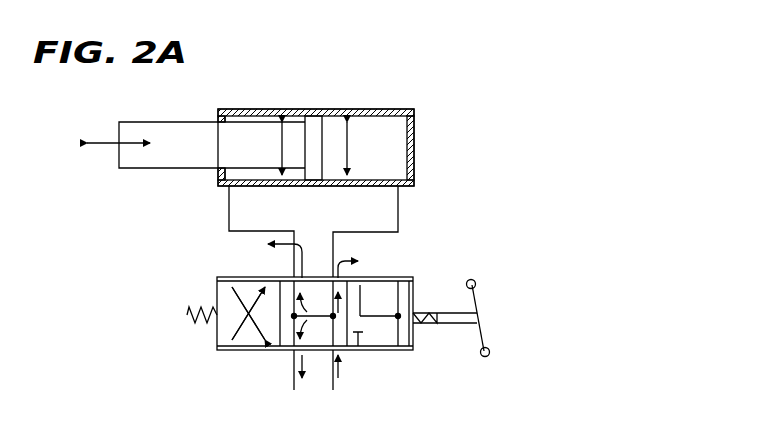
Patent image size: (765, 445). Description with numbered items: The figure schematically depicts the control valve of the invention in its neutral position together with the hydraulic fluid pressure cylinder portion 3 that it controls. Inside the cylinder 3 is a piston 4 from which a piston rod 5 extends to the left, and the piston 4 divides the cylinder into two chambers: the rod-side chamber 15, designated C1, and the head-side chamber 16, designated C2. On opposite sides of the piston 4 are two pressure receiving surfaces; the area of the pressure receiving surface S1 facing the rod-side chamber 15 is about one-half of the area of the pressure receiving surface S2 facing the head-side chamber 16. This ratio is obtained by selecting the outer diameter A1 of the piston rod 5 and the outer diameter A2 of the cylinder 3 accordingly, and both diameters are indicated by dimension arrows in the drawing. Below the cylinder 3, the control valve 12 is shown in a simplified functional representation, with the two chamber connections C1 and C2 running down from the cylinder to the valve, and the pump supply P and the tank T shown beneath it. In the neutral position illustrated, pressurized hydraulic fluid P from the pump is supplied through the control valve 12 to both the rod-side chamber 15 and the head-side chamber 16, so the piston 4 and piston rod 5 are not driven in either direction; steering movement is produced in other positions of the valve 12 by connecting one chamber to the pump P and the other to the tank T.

The hydraulic fluid pressure cylinder portion 3 is at (377, 108).
The piston 4 is at (313, 180).
The piston rod 5 is at (163, 160).
The control valve 12 is at (386, 277).
The rod-side chamber 15 is at (262, 180).
The head-side chamber 16 is at (400, 146).
The pressure receiving surface of the rod-side chamber S1 is at (300, 120).
The pressure receiving surface of the head-side chamber S2 is at (325, 126).
The outer diameter of the piston rod A1 is at (271, 144).
The outer diameter of the cylinder A2 is at (365, 149).
The rod-side chamber designation C1 is at (254, 232).
The head-side chamber designation C2 is at (382, 232).
The tank T is at (294, 383).
The pressurized hydraulic fluid from the pump P is at (331, 383).